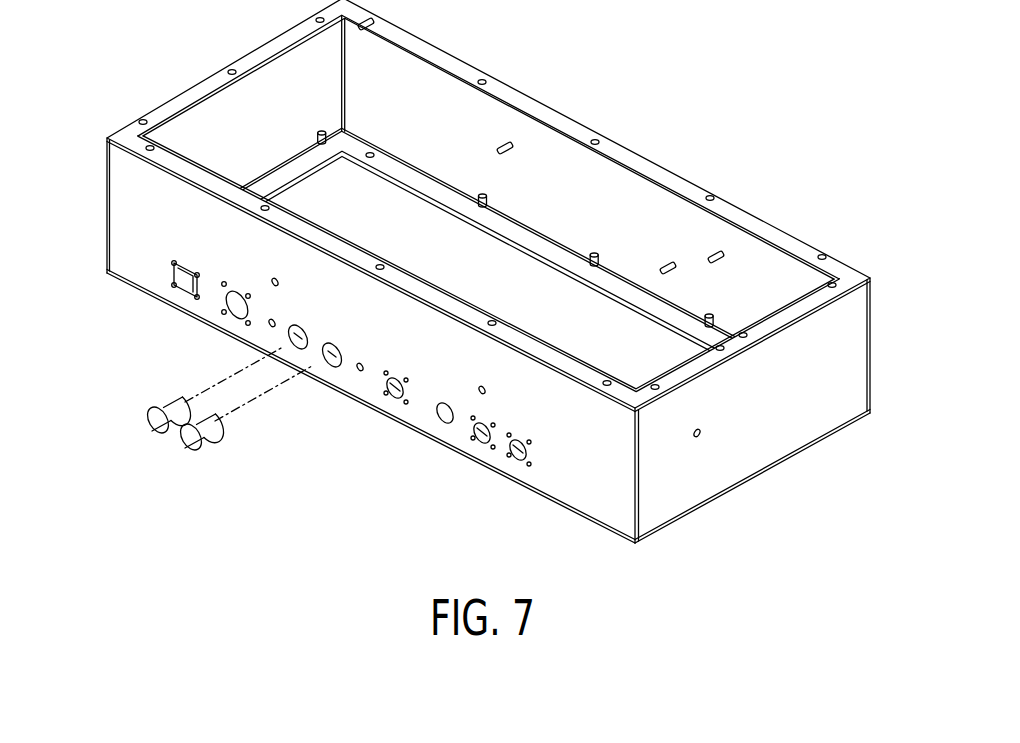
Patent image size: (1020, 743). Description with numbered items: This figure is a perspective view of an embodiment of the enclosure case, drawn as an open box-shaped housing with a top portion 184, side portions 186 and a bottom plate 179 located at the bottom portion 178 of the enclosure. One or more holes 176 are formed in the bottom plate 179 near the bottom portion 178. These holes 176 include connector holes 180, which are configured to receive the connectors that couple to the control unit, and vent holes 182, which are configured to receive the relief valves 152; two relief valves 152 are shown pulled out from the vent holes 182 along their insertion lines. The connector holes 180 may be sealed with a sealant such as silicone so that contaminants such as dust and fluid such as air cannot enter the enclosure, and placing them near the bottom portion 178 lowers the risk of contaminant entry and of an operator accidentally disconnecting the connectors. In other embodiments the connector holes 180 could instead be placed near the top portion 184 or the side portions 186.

The relief valve 152 is at (156, 425).
The holes 176 is at (215, 370).
The bottom portion 178 is at (381, 556).
The bottom plate 179 is at (600, 505).
The connector holes 180 is at (225, 322).
The vent holes 182 is at (299, 350).
The top portion 184 is at (660, 122).
The side portions 186 is at (143, 36).